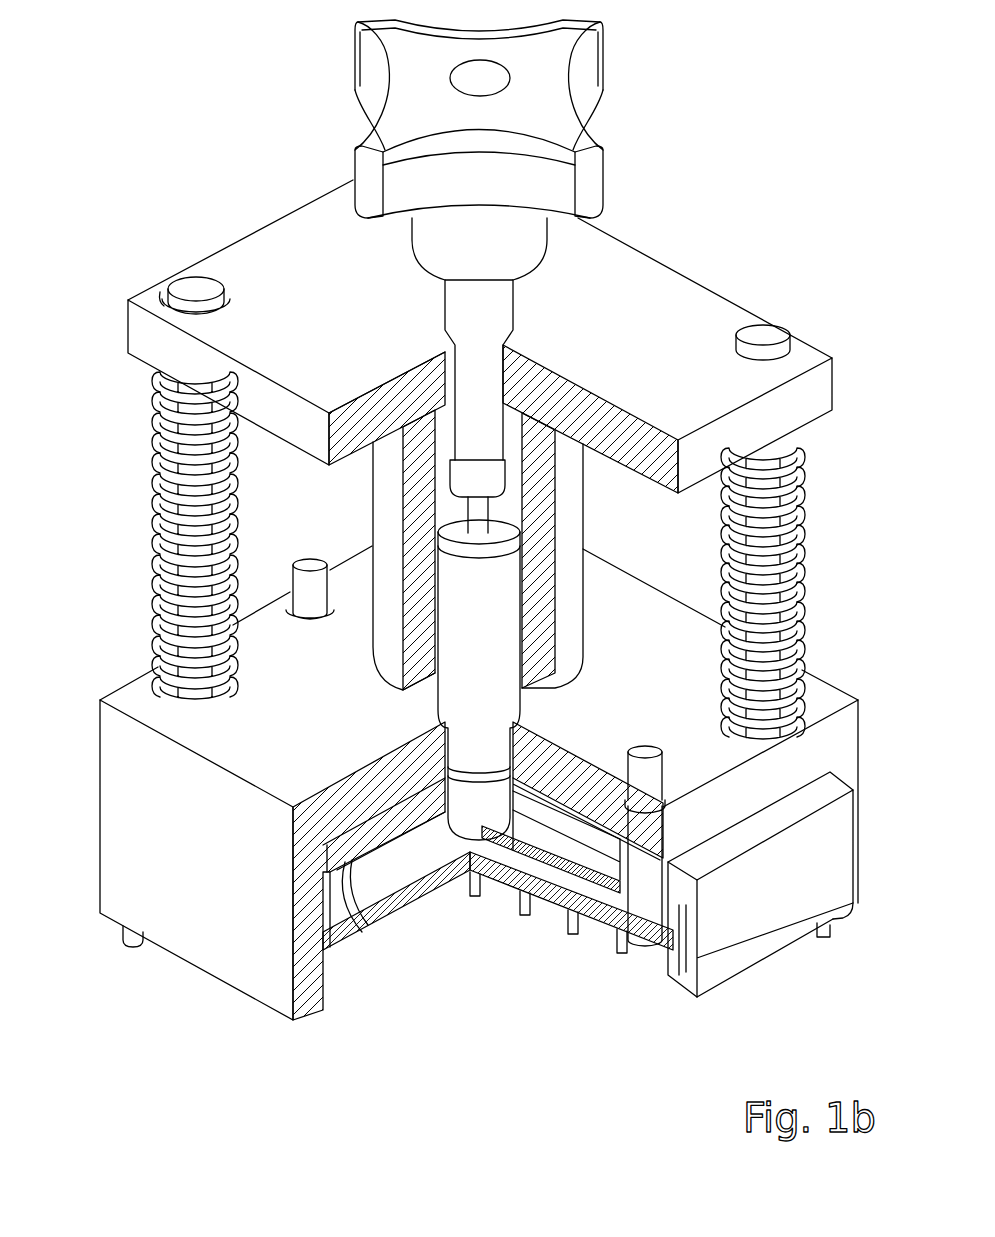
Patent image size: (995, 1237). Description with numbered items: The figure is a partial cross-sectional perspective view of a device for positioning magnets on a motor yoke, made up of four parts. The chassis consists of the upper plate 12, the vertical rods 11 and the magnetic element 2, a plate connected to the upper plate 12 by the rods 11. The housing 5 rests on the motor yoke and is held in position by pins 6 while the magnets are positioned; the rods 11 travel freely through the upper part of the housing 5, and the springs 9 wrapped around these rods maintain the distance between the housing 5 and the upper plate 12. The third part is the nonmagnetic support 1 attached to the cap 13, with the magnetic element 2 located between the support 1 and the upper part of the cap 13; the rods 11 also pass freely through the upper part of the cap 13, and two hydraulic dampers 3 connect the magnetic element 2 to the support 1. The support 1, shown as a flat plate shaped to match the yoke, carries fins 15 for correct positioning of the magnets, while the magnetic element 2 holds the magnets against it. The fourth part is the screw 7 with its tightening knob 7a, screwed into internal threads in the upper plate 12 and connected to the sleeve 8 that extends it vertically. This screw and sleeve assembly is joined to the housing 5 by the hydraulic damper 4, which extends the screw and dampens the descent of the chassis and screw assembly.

The nonmagnetic support 1 is at (660, 965).
The magnetic element 2 is at (422, 853).
The hydraulic damper 3 is at (650, 875).
The hydraulic damper 4 is at (450, 593).
The housing 5 is at (96, 750).
The pin 6 is at (135, 940).
The screw 7 is at (493, 315).
The tightening knob 7a is at (530, 100).
The sleeve 8 is at (565, 493).
The spring 9 is at (790, 492).
The vertical rod 11 is at (180, 557).
The upper plate 12 is at (308, 243).
The cap 13 is at (355, 857).
The fin 15 is at (585, 937).